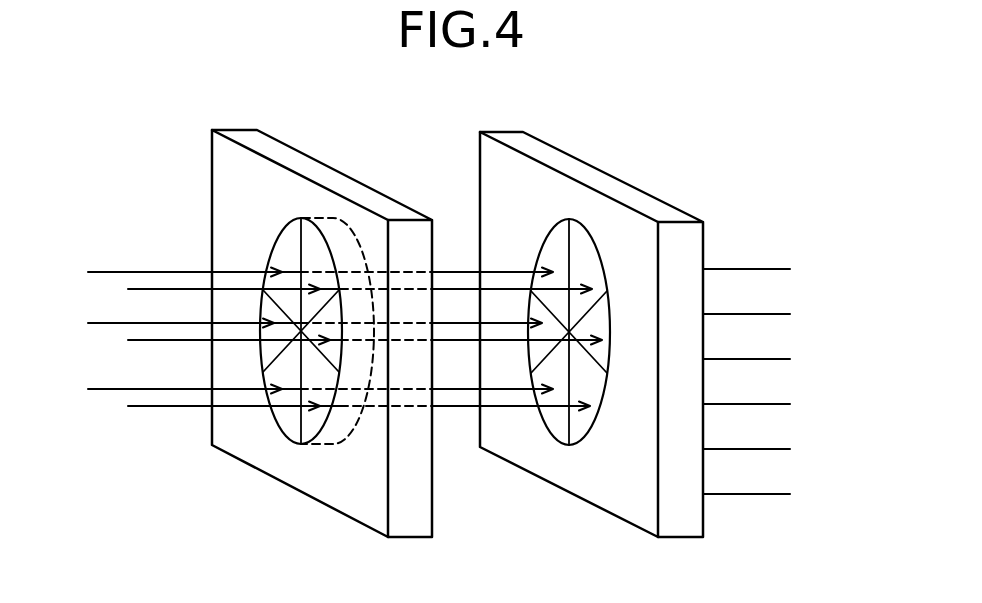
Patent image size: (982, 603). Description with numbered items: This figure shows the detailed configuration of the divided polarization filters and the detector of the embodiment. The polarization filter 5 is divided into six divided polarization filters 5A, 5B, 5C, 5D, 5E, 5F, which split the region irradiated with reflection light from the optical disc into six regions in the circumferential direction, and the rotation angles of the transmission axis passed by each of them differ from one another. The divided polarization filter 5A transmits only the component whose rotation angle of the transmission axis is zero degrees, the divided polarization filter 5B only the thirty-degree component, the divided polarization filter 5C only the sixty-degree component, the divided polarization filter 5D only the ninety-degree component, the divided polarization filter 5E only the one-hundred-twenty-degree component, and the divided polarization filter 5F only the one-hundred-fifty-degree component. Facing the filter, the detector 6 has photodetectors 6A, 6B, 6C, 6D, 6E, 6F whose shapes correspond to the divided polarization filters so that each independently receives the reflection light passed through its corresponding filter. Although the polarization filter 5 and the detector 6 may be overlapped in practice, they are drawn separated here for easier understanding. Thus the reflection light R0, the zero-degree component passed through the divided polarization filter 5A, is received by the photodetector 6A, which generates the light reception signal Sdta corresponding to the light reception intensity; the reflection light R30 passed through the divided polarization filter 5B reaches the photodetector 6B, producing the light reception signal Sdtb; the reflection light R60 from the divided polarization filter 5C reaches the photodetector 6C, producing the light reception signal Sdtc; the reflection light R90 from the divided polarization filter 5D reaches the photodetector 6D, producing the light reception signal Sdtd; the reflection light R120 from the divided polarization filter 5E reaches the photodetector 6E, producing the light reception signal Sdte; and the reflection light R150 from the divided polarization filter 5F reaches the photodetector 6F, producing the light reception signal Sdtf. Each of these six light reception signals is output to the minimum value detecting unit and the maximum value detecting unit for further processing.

The polarization filter 5 is at (234, 130).
The divided polarization filter 5A is at (280, 250).
The divided polarization filter 5B is at (320, 247).
The divided polarization filter 5C is at (337, 355).
The divided polarization filter 5D is at (315, 427).
The divided polarization filter 5E is at (282, 420).
The divided polarization filter 5F is at (267, 357).
The detector 6 is at (512, 132).
The photodetector 6A is at (552, 247).
The photodetector 6B is at (590, 257).
The photodetector 6C is at (607, 357).
The photodetector 6D is at (583, 423).
The photodetector 6E is at (555, 423).
The photodetector 6F is at (533, 355).
The reflection light R0 is at (462, 272).
The reflection light R30 is at (563, 289).
The reflection light R60 is at (584, 330).
The reflection light R90 is at (520, 408).
The reflection light R120 is at (452, 390).
The reflection light R150 is at (502, 323).
The light reception signal Sdta is at (776, 269).
The light reception signal Sdtb is at (776, 314).
The light reception signal Sdtc is at (776, 359).
The light reception signal Sdtd is at (776, 404).
The light reception signal Sdte is at (776, 449).
The light reception signal Sdtf is at (776, 494).